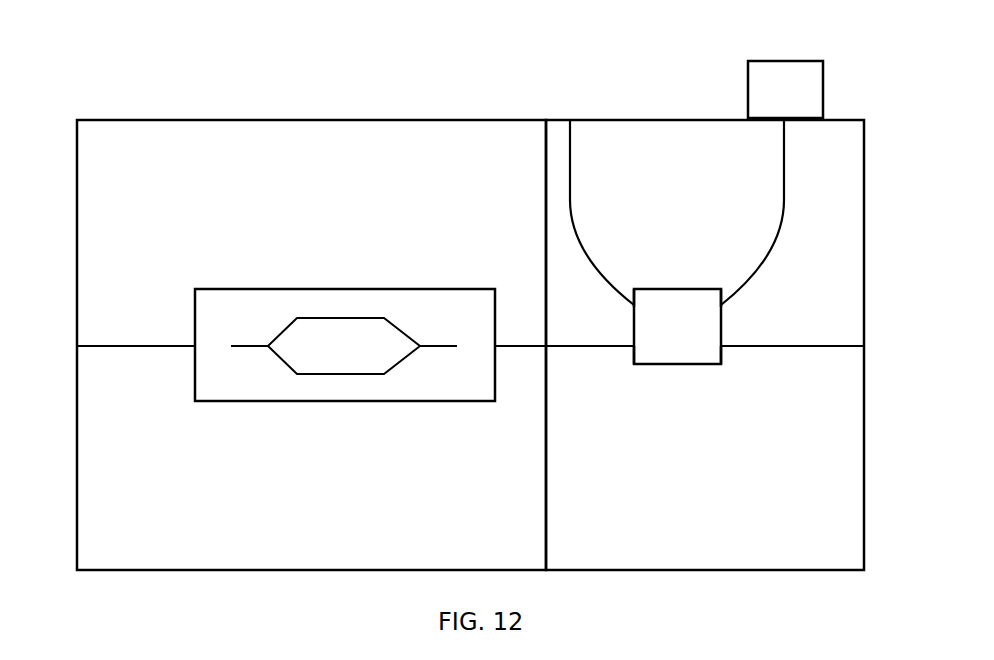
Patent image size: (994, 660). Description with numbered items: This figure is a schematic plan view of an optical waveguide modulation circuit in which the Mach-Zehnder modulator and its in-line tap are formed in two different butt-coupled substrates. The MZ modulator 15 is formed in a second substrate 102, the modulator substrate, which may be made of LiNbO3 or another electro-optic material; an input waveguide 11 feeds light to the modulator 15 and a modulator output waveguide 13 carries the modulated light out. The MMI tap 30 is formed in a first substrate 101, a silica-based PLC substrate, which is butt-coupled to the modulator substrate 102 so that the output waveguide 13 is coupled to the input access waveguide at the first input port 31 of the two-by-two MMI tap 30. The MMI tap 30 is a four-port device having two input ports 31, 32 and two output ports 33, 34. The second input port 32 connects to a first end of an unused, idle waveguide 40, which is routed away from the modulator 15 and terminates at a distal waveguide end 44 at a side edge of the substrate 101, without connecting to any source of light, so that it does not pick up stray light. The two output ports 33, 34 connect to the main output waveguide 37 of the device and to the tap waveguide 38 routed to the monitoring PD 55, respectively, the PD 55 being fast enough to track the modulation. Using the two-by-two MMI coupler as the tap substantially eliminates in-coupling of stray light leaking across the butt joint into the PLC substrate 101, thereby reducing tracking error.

The second substrate 102 is at (150, 174).
The first substrate 101 is at (853, 169).
The input waveguide 11 is at (130, 345).
The MZ modulator 15 is at (335, 289).
The modulator output waveguide 13 is at (518, 347).
The MMI tap 30 is at (693, 365).
The first input port 31 is at (633, 350).
The second input port 32 is at (630, 302).
The first output port 33 is at (723, 348).
The second output port 34 is at (727, 290).
The tap waveguide 38 is at (777, 238).
The idle waveguide 40 is at (588, 256).
The main output waveguide 37 is at (795, 346).
The distal waveguide end 44 is at (568, 115).
The monitoring PD 55 is at (748, 74).